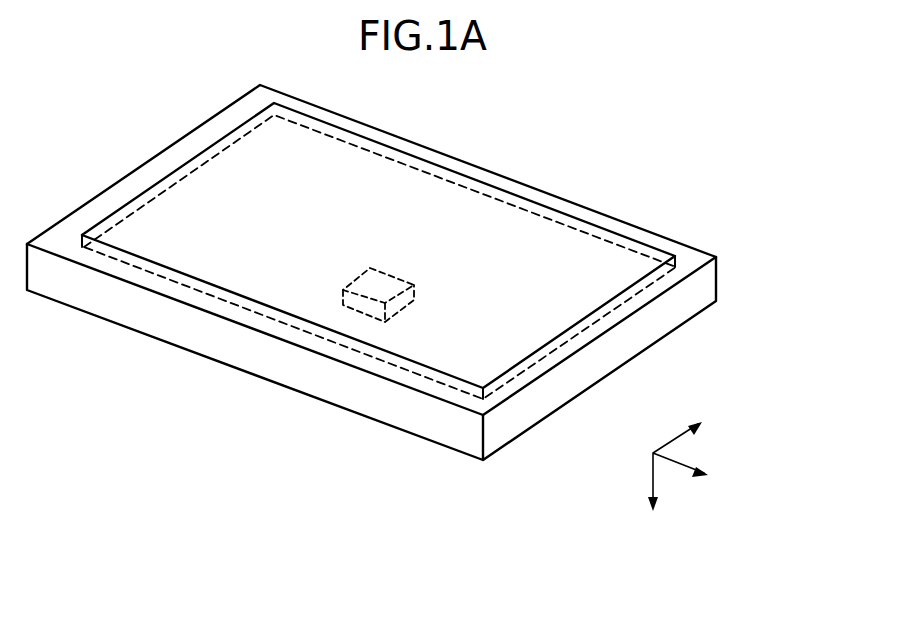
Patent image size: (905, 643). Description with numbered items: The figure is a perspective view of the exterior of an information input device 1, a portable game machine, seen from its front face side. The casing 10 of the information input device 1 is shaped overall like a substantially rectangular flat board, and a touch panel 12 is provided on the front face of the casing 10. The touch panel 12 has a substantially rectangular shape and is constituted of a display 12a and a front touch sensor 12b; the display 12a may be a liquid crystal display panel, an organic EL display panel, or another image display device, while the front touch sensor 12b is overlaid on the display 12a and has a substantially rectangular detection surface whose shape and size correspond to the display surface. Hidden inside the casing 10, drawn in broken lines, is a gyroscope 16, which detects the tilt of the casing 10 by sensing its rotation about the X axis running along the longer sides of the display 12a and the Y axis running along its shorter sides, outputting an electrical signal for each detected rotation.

The information input device 1 is at (508, 502).
The casing 10 is at (333, 405).
The touch panel 12 is at (789, 222).
The display 12a is at (665, 275).
The front touch sensor 12b is at (662, 248).
The gyroscope 16 is at (395, 277).